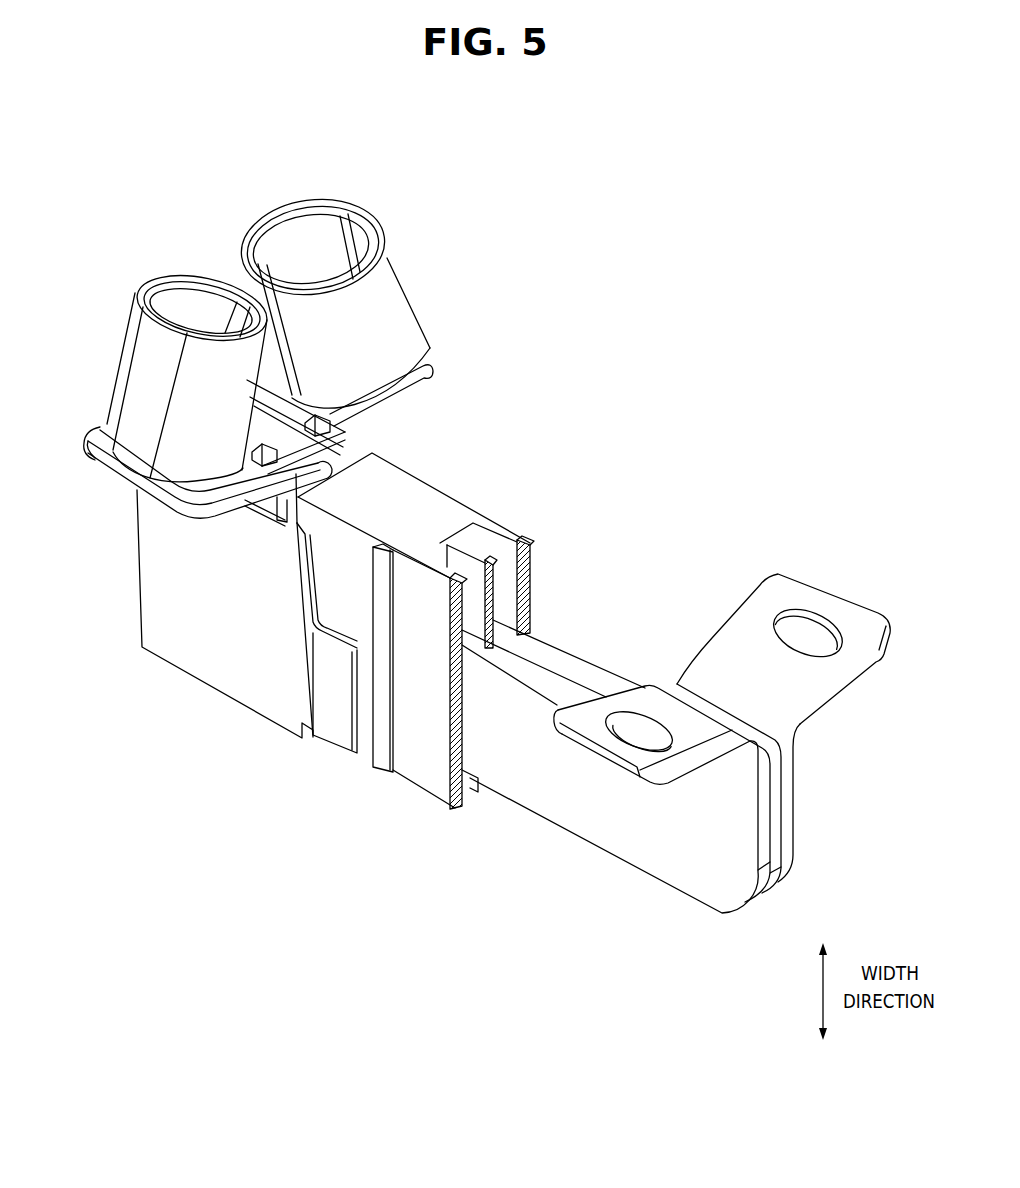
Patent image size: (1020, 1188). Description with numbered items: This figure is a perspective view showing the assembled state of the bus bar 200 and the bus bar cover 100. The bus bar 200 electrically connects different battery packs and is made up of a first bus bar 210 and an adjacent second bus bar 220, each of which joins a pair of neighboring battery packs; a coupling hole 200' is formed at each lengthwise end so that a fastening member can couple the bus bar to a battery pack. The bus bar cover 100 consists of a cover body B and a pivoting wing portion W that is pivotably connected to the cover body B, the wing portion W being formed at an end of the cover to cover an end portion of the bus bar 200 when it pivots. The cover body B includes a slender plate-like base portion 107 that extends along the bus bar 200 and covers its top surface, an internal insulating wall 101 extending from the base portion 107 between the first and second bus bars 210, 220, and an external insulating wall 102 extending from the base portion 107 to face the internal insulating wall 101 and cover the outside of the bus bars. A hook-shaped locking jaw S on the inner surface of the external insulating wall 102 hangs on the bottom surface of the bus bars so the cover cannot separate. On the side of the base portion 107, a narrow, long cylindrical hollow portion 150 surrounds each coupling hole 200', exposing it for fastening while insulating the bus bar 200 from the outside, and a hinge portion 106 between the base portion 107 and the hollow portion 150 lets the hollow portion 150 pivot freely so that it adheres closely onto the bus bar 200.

The bus bar cover 100 is at (306, 534).
The internal insulating wall 101 is at (483, 548).
The external insulating wall 102 is at (522, 537).
The hinge portion 106 is at (344, 427).
The base portion 107 is at (414, 682).
The hollow portion 150 is at (357, 228).
The bus bar 200 is at (676, 762).
The coupling hole 200' is at (783, 618).
The first bus bar 210 is at (723, 882).
The second bus bar 220 is at (790, 853).
The pivoting wing portion W is at (198, 715).
The locking jaw S is at (470, 782).
The cover body B is at (385, 812).